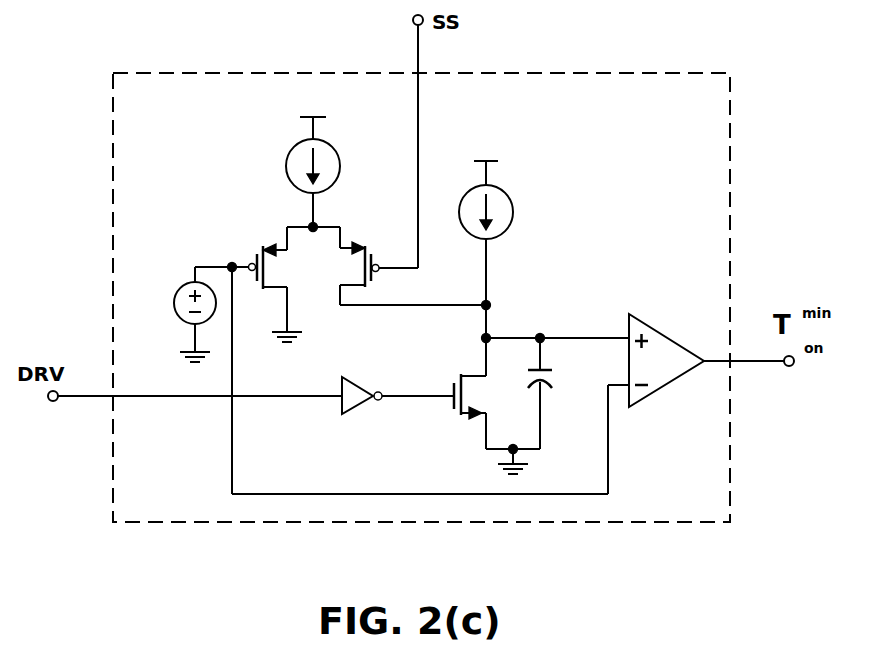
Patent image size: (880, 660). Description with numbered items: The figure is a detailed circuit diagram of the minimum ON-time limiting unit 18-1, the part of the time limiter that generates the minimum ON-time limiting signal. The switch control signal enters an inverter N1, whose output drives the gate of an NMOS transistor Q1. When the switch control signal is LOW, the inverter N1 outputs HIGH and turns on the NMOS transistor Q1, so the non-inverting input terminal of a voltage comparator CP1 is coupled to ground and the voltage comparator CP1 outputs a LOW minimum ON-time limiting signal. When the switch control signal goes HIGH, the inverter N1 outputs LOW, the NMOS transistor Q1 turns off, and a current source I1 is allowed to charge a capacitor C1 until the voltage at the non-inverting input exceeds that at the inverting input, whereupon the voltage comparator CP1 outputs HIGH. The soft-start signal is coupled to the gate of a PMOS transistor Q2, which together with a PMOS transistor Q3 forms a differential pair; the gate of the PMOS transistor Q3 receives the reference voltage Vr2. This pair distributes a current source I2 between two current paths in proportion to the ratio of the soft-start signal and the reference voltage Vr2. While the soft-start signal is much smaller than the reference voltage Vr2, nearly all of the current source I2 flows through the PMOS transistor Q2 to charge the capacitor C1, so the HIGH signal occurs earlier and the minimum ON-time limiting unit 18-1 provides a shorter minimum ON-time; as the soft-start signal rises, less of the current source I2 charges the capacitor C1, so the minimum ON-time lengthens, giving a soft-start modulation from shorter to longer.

The minimum ON-time limiting unit 18-1 is at (733, 141).
The NMOS transistor Q1 is at (455, 375).
The PMOS transistor Q2 is at (413, 259).
The PMOS transistor Q3 is at (267, 277).
The current source I1 is at (501, 236).
The current source I2 is at (295, 158).
The capacitor C1 is at (555, 393).
The voltage comparator CP1 is at (677, 337).
The inverter N1 is at (360, 413).
The reference voltage Vr2 is at (190, 313).